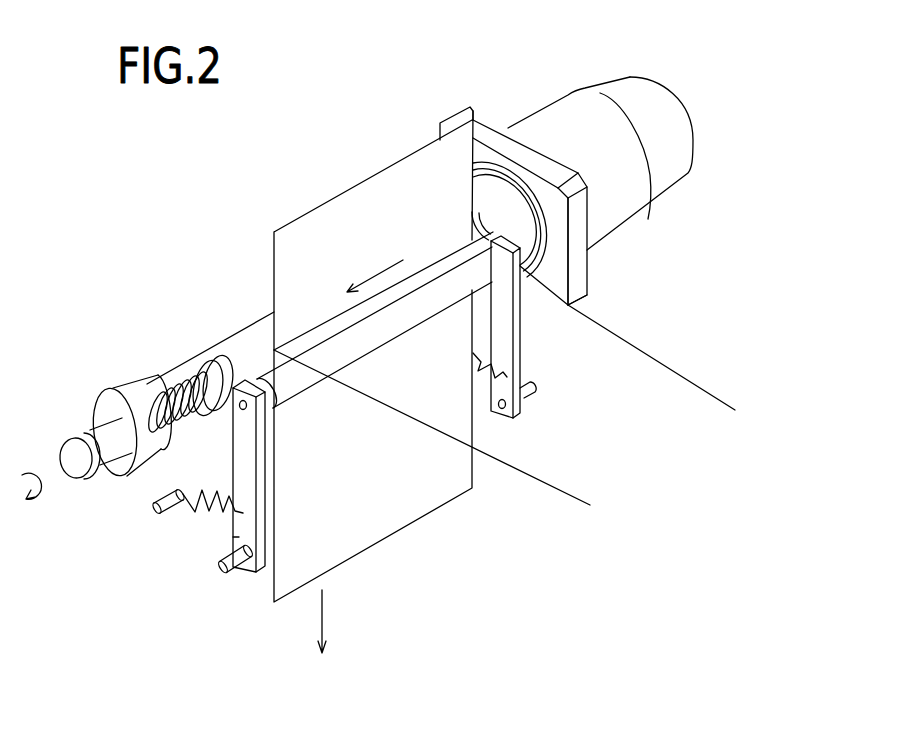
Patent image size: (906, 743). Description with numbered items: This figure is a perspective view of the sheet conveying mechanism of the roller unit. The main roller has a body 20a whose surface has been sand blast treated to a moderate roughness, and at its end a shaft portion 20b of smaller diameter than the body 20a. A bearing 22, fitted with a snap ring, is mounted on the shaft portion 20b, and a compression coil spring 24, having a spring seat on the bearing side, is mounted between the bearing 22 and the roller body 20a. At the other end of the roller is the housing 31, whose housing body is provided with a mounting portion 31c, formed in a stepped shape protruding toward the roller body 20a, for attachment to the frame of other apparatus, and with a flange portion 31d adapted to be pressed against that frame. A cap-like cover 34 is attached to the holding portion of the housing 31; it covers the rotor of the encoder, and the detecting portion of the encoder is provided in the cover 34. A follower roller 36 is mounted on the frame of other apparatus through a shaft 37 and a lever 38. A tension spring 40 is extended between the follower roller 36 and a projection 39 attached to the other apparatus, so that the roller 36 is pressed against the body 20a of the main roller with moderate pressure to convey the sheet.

The roller body 20a is at (248, 353).
The shaft portion 20b is at (86, 416).
The bearing 22 is at (112, 389).
The compression coil spring 24 is at (172, 382).
The housing 31 is at (617, 214).
The mounting portion 31c is at (495, 170).
The flange portion 31d is at (542, 190).
The cover 34 is at (677, 180).
The roller 36 is at (287, 387).
The shaft 37 is at (221, 571).
The lever 38 is at (233, 537).
The projection 39 is at (152, 508).
The tension spring 40 is at (193, 509).